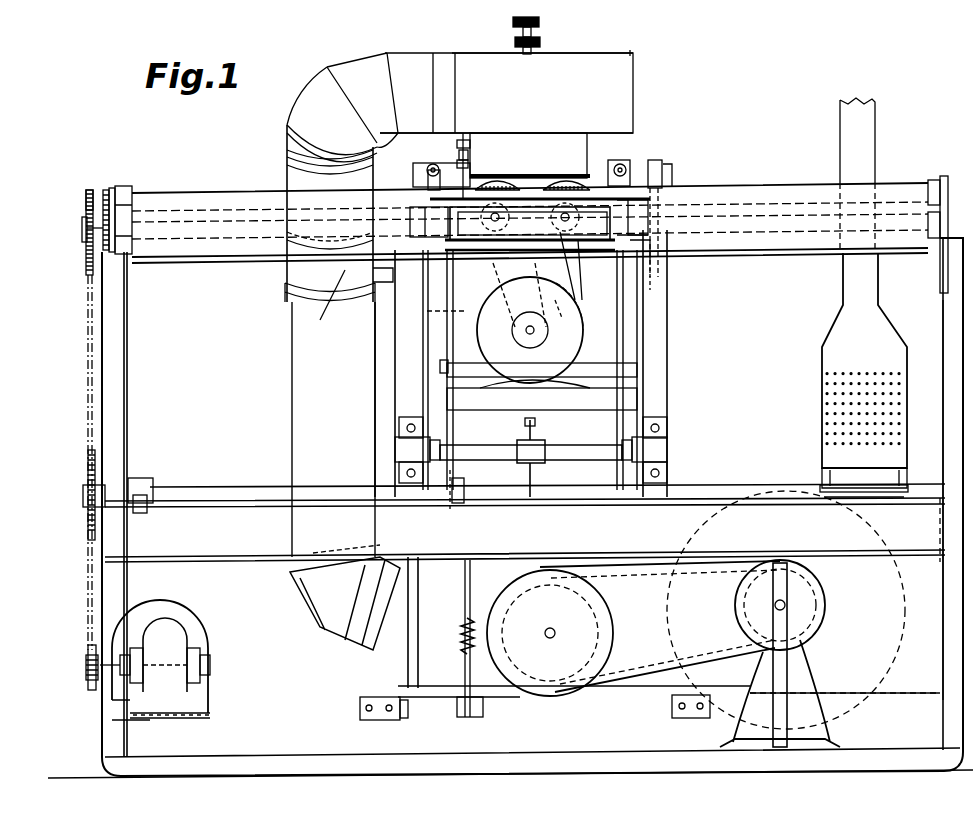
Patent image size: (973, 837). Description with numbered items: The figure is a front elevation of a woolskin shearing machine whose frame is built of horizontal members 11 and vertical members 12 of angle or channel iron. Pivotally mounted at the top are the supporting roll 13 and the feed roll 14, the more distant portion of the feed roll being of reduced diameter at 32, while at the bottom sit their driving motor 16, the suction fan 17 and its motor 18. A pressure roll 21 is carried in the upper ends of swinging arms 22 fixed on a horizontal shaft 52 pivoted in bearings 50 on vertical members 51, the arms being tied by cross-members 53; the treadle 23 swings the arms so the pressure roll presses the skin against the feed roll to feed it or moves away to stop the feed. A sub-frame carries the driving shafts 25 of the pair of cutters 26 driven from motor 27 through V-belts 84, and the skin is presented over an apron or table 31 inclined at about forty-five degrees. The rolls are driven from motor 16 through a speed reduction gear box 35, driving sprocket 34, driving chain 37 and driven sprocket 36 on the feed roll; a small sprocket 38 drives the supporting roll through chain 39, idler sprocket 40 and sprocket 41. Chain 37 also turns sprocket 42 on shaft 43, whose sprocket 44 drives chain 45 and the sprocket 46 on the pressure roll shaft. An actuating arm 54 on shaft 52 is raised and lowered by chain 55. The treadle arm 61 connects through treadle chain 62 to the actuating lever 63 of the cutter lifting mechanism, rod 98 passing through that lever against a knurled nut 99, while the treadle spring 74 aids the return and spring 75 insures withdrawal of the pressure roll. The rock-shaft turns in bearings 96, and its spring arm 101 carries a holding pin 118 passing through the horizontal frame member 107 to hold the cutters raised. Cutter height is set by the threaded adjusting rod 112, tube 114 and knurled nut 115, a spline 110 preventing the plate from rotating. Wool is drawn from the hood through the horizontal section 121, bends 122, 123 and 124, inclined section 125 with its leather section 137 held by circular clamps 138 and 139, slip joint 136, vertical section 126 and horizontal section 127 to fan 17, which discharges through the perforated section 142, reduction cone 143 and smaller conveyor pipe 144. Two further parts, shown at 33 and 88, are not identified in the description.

The horizontal members 11 is at (254, 555).
The vertical members 12 is at (125, 374).
The supporting roll 13 is at (640, 198).
The feed roll 14 is at (655, 162).
The driving motor 16 is at (185, 618).
The suction fan 17 is at (888, 650).
The fan motor 18 is at (520, 665).
The pressure roll 21 is at (580, 282).
The swinging arms 22 is at (445, 328).
The treadle 23 is at (545, 695).
The driving shafts 25 is at (528, 205).
The cutters 26 is at (488, 176).
The cutter motor 27 is at (578, 328).
The apron or table 31 is at (755, 198).
The reduced-diameter portion of feed roll 32 is at (636, 226).
The hub 33 is at (520, 346).
The driving sprocket 34 is at (96, 685).
The speed reduction gear box 35 is at (172, 638).
The driven sprocket 36 is at (86, 192).
The driving chain 37 is at (88, 375).
The small sprocket 38 is at (88, 250).
The chain 39 is at (110, 205).
The idler sprocket 40 is at (82, 229).
The sprocket 41 is at (108, 192).
The sprocket 42 is at (83, 490).
The shaft 43 is at (205, 496).
The sprocket 44 is at (464, 486).
The chain 45 is at (440, 364).
The sprocket 46 is at (450, 248).
The bearings 50 is at (395, 451).
The vertical members 51 is at (400, 400).
The horizontal shaft 52 is at (582, 448).
The cross-members 53 is at (575, 368).
The actuating arm 54 is at (542, 442).
The chain 55 is at (528, 423).
The treadle arm 61 is at (465, 671).
The treadle chain 62 is at (429, 312).
The actuating lever 63 is at (449, 160).
The treadle spring 74 is at (461, 634).
The spring 75 is at (591, 307).
The V-belts 84 is at (500, 284).
The housing box 88 is at (580, 133).
The bearings 96 is at (413, 176).
The rod 98 is at (465, 143).
The knurled nut 99 is at (459, 152).
The spring arm 101 is at (668, 164).
The cross-member 107 is at (640, 235).
The spline 110 is at (540, 22).
The threaded adjusting rod 112 is at (523, 32).
The tube 114 is at (527, 54).
The knurled nut 115 is at (547, 42).
The holding pin 118 is at (655, 268).
The horizontal section 121 is at (576, 58).
The elbow 122 is at (318, 92).
The elbow 123 is at (285, 298).
The elbow 124 is at (350, 640).
The inclined section 125 is at (287, 272).
The vertical section 126 is at (292, 385).
The horizontal section 127 is at (408, 660).
The slip joint 136 is at (442, 60).
The leather tubular section 137 is at (287, 183).
The circular clamp 138 is at (287, 162).
The circular clamp 139 is at (327, 303).
The perforated section 142 is at (822, 364).
The reduction cone 143 is at (886, 326).
The conveyor pipe 144 is at (866, 170).